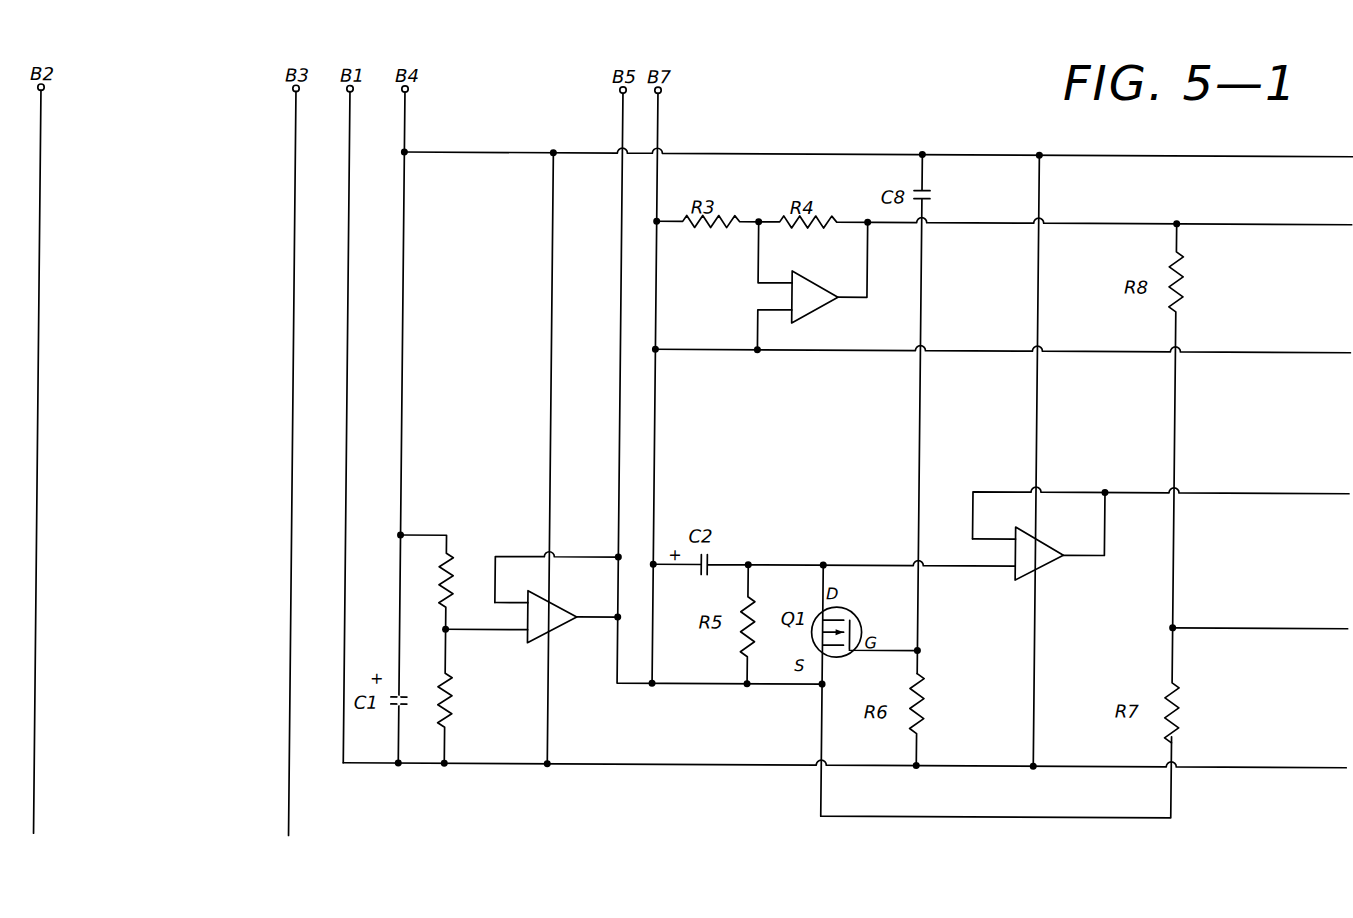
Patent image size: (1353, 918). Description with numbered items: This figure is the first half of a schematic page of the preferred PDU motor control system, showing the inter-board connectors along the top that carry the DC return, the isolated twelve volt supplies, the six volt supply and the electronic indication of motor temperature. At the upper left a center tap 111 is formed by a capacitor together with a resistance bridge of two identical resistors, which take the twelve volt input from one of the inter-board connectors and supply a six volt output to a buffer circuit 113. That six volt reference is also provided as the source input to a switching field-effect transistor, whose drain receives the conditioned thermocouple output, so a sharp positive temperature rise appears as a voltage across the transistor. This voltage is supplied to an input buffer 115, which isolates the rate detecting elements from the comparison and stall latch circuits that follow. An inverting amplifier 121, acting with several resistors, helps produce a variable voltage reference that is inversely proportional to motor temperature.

The center tap 111 is at (436, 526).
The buffer circuit 113 is at (531, 643).
The input buffer 115 is at (1016, 549).
The inverting amplifier 121 is at (813, 312).